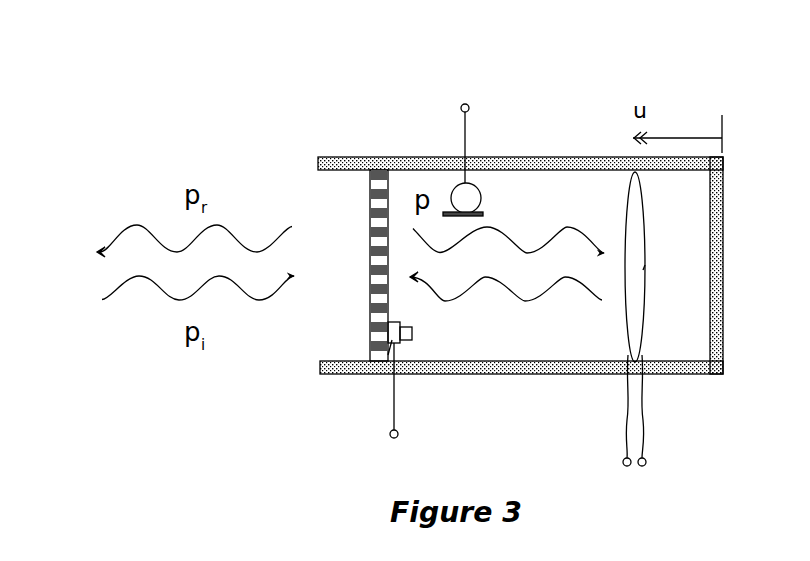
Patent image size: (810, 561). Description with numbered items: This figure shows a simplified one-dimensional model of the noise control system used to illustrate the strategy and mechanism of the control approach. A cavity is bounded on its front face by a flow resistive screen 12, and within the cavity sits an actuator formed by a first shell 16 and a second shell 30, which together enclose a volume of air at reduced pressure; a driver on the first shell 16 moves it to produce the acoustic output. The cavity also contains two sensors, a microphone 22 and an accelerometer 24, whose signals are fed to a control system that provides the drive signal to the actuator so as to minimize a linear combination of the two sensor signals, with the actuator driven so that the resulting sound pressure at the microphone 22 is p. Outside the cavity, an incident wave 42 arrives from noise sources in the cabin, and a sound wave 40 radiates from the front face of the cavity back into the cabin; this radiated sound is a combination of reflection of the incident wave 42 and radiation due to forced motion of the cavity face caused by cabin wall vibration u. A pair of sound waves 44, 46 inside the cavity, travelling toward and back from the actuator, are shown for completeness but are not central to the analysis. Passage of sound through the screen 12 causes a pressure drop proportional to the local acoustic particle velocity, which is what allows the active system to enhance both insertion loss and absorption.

The membrane / absorber panel 12 is at (368, 200).
The first shell 16 is at (625, 303).
The microphone 22 is at (458, 189).
The accelerometer 24 is at (392, 340).
The second shell 30 is at (643, 270).
The sound wave 40 is at (135, 225).
The incident wave 42 is at (173, 300).
The sound wave in the cavity 44 is at (568, 227).
The sound wave in the cavity 46 is at (533, 302).